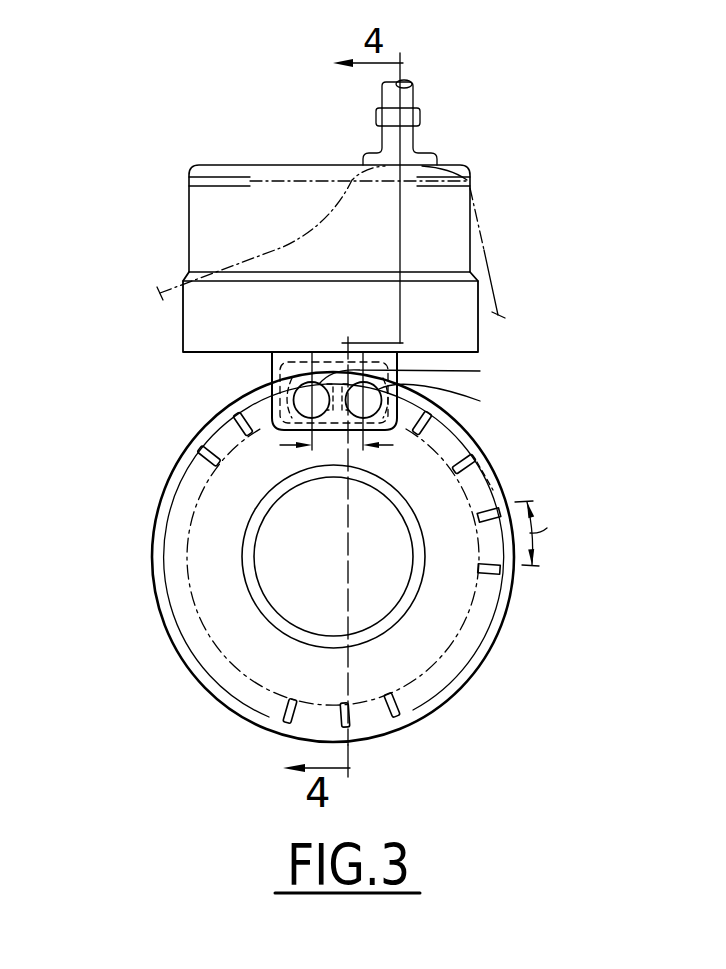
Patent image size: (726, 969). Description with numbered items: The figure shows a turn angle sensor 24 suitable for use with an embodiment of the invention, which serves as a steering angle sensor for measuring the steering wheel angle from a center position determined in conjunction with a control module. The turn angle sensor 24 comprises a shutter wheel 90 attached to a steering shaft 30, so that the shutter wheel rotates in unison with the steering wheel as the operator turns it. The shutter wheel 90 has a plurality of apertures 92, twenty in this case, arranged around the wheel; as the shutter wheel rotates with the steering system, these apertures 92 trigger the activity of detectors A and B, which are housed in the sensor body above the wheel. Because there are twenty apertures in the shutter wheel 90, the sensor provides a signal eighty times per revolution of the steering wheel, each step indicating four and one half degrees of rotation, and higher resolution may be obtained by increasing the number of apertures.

The turn angle sensor 24 is at (551, 263).
The steering shaft 30 is at (380, 638).
The shutter wheel 90 is at (506, 621).
The apertures 92 is at (478, 455).